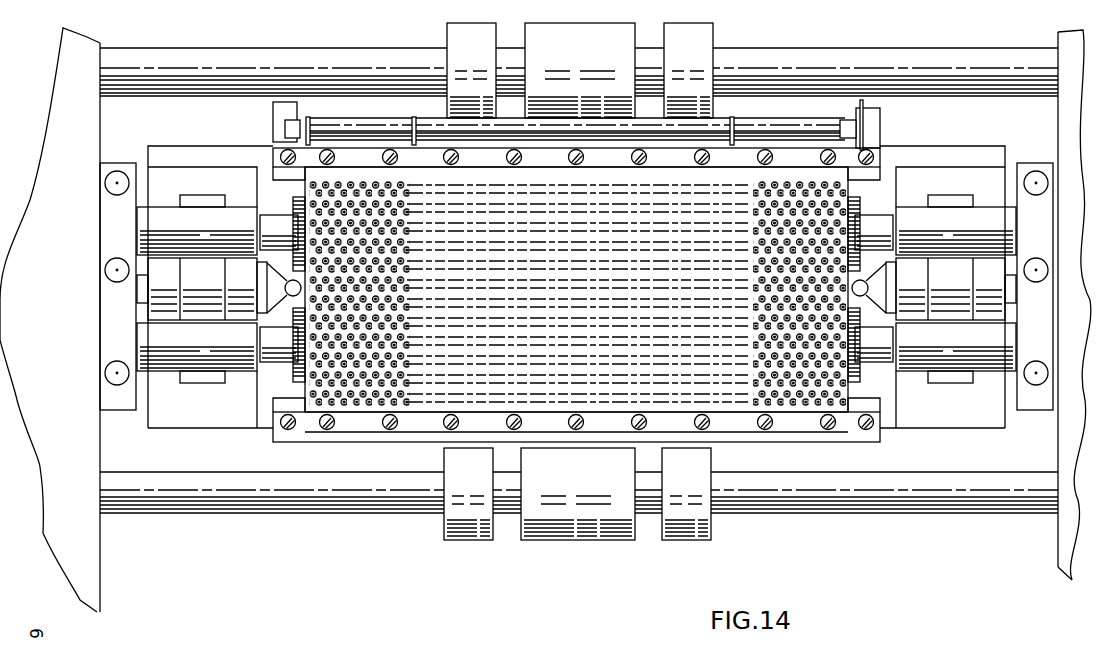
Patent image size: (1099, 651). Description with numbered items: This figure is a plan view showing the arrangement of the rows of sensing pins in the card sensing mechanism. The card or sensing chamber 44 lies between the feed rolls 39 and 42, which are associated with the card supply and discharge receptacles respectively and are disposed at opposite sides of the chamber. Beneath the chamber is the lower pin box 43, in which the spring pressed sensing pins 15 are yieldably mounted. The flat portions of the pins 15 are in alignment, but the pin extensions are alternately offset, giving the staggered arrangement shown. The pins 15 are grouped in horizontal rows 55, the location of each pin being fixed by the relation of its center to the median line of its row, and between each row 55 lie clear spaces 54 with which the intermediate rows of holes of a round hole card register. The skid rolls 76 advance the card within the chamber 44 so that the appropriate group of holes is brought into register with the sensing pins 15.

The feed rolls 42 is at (700, 45).
The feed rolls 39 is at (620, 527).
The lower pin box 43 is at (912, 423).
The sensing chamber 44 is at (410, 407).
The sensing pins 15 is at (362, 183).
The horizontal row 55 is at (531, 395).
The clear spaces 54 is at (610, 388).
The skid rolls 76 is at (297, 200).